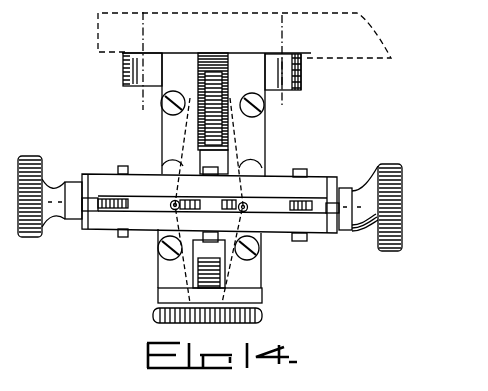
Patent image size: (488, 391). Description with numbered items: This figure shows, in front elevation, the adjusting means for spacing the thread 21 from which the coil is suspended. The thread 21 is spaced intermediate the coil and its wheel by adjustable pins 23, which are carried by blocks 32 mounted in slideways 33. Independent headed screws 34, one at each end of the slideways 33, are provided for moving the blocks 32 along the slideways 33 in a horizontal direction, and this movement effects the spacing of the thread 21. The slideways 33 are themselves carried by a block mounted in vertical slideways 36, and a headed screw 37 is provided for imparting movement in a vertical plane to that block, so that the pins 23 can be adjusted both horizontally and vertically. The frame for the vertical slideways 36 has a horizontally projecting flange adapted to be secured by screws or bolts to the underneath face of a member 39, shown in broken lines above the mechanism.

The thread 21 is at (247, 153).
The adjustable pins 23 is at (172, 208).
The blocks 32 is at (141, 203).
The slideways 33 is at (304, 187).
The headed screws 34 is at (35, 156).
The vertical slideways 36 is at (163, 121).
The headed screw 37 is at (262, 318).
The member 39 is at (112, 22).